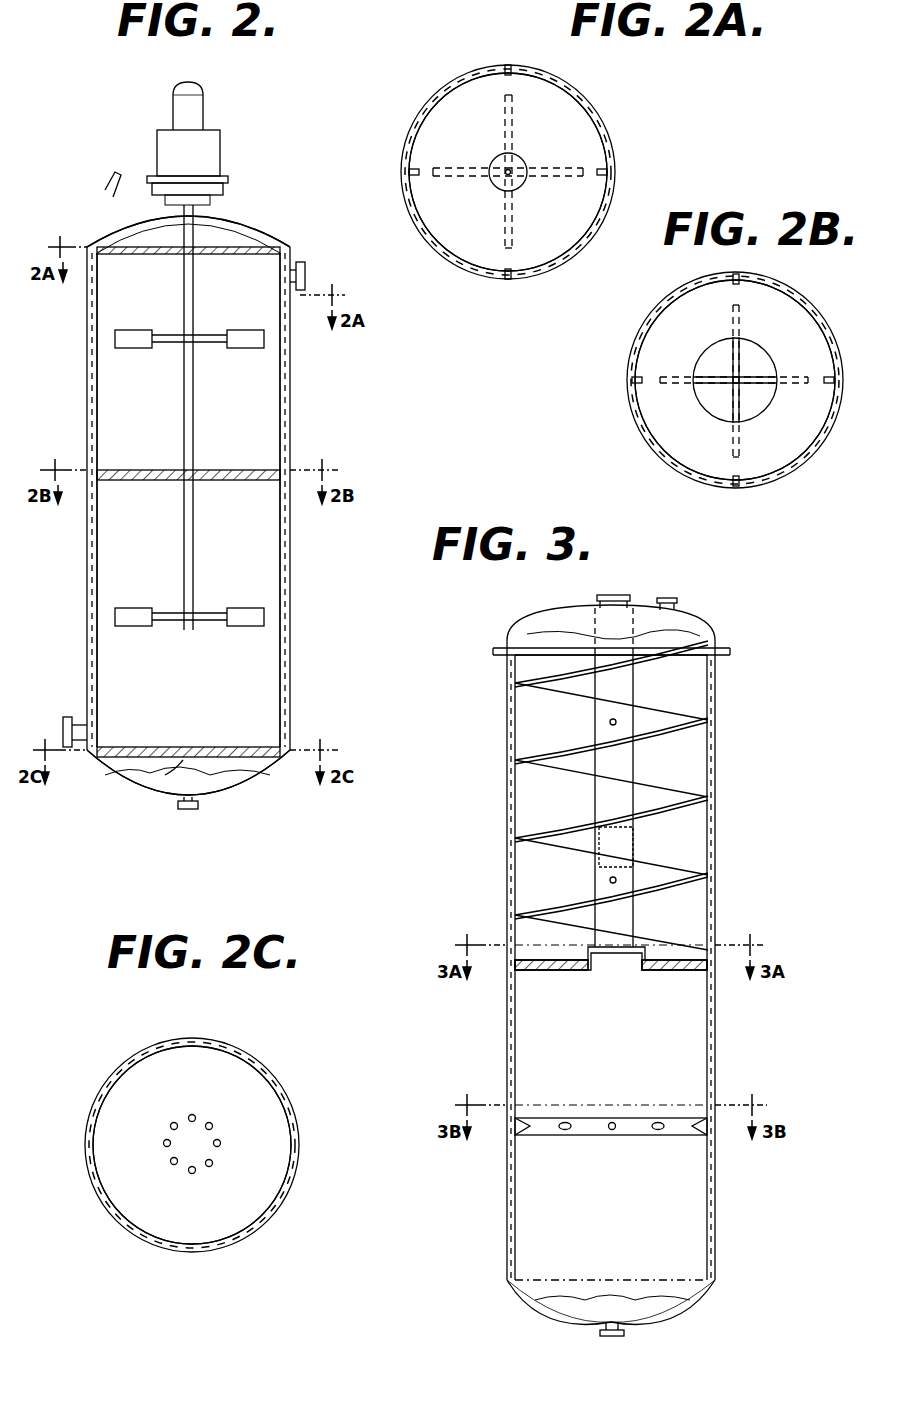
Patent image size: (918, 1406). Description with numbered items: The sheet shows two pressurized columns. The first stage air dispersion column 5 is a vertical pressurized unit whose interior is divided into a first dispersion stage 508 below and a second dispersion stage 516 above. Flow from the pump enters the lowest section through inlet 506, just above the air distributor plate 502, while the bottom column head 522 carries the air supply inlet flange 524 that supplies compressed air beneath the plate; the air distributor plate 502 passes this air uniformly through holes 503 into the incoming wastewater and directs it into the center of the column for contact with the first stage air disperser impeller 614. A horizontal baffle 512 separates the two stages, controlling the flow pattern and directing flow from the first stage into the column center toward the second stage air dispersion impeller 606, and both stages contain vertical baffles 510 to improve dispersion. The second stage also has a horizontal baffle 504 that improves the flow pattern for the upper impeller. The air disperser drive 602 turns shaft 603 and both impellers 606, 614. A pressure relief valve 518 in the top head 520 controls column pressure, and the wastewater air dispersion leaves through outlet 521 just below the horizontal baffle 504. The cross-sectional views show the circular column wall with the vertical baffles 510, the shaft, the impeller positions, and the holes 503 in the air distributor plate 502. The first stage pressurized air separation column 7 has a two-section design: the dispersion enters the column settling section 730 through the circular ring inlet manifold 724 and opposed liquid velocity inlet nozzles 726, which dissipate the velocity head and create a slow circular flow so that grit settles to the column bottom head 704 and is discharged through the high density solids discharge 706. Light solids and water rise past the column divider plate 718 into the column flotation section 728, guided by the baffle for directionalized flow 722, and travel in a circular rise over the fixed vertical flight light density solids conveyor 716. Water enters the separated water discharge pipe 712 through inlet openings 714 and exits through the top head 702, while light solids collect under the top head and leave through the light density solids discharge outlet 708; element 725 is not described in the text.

In FIG. 2, the first stage air dispersion column 5 is at (83, 606).
In FIG. 2A, the first stage air dispersion column 5 is at (405, 110).
In FIG. 2B, the first stage air dispersion column 5 is at (622, 380).
In FIG. 2C, the first stage air dispersion column 5 is at (163, 1035).
In FIG. 3, the first stage pressurized air separation column 7 is at (730, 846).
In FIG. 2, the air distributor plate 502 is at (243, 747).
In FIG. 2C, the air distributor plate 502 is at (110, 1121).
In FIG. 2, the holes 503 is at (190, 757).
In FIG. 2C, the holes 503 is at (190, 1175).
In FIG. 2, the horizontal baffle 504 is at (130, 245).
In FIG. 2A, the horizontal baffle 504 is at (555, 113).
In FIG. 2, the inlet 506 is at (70, 718).
In FIG. 2, the first dispersion stage 508 is at (188, 613).
In FIG. 2, the vertical baffles 510 is at (280, 508).
In FIG. 2A, the vertical baffles 510 is at (598, 180).
In FIG. 2B, the vertical baffles 510 is at (828, 385).
In FIG. 2, the horizontal baffle 512 is at (228, 470).
In FIG. 2B, the horizontal baffle 512 is at (665, 420).
In FIG. 2, the second dispersion stage 516 is at (188, 361).
In FIG. 2, the pressure relief valve 518 is at (111, 188).
In FIG. 2, the top head 520 is at (258, 228).
In FIG. 2, the outlet 521 is at (308, 266).
In FIG. 2, the bottom column head 522 is at (230, 782).
In FIG. 2, the air supply inlet flange 524 is at (184, 812).
In FIG. 2, the air disperser drive 602 is at (212, 145).
In FIG. 2, the shaft 603 is at (183, 296).
In FIG. 2A, the shaft 603 is at (505, 178).
In FIG. 2, the second stage air dispersion impeller 606 is at (254, 342).
In FIG. 2A, the second stage air dispersion impeller 606 is at (504, 120).
In FIG. 2B, the second stage air dispersion impeller 606 is at (790, 375).
In FIG. 2, the first stage air disperser impeller 614 is at (248, 622).
In FIG. 3, the top head 702 is at (570, 612).
In FIG. 3, the column bottom head 704 is at (653, 1312).
In FIG. 3, the high density solids discharge 706 is at (600, 1336).
In FIG. 3, the light density solids discharge outlet 708 is at (670, 596).
In FIG. 3, the separated water discharge pipe 712 is at (628, 762).
In FIG. 3, the inlet openings 714 is at (609, 724).
In FIG. 3, the fixed vertical flight light density solids conveyor 716 is at (683, 790).
In FIG. 3, the column divider plate 718 is at (680, 972).
In FIG. 3, the baffle for directionalized flow 722 is at (693, 960).
In FIG. 3, the circular ring inlet manifold 724 is at (707, 1104).
In FIG. 3, the plate section 725 is at (568, 972).
In FIG. 3, the opposed liquid velocity inlet nozzles 726 is at (680, 1132).
In FIG. 3, the column flotation section 728 is at (543, 880).
In FIG. 3, the column settling section 730 is at (611, 1044).